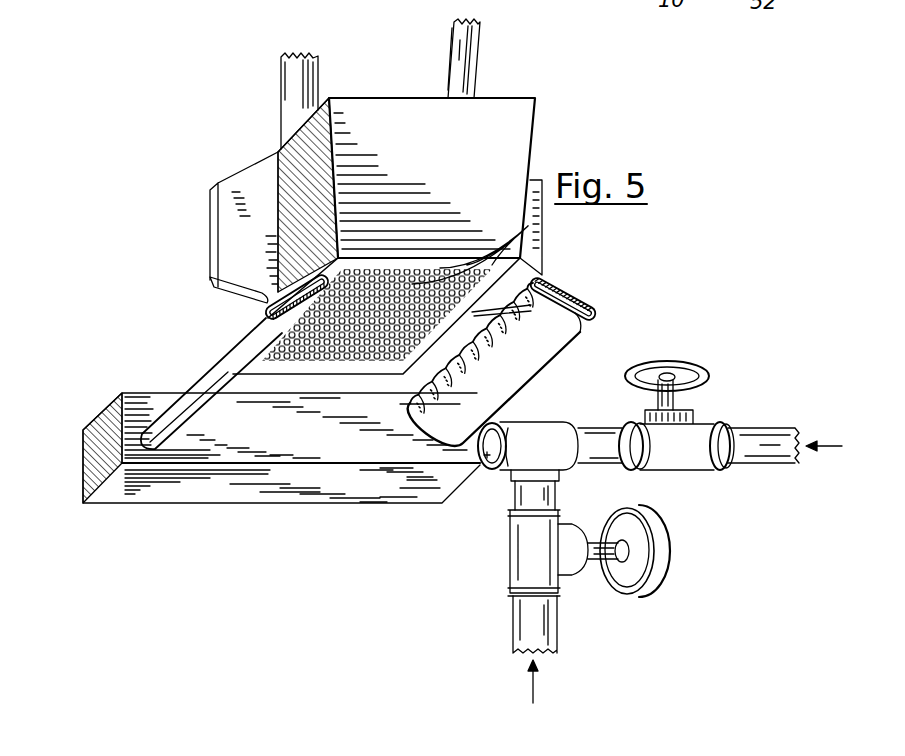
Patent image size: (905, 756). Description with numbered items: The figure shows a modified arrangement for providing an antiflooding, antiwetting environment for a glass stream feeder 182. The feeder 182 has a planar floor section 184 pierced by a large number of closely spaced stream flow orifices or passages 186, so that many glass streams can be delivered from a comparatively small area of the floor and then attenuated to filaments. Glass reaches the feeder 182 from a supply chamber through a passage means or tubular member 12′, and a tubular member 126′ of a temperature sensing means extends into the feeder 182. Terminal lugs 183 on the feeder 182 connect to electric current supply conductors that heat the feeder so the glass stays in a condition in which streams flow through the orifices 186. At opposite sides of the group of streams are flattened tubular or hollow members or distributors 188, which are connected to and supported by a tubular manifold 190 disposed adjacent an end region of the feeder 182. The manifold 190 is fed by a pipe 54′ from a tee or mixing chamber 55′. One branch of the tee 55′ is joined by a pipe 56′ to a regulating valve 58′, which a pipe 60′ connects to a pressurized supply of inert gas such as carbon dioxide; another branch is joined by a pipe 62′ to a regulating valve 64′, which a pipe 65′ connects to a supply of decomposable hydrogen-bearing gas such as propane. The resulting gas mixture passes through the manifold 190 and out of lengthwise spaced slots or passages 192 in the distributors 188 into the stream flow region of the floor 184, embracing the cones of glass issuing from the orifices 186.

The passage means or tubular member 12′ is at (343, 36).
The tubular member of a temperature sensing means 126′ is at (449, 48).
The glass stream feeder 182 is at (537, 98).
The terminal lugs 183 is at (245, 178).
The planar floor section 184 is at (343, 367).
The stream flow orifices or passages 186 is at (528, 226).
The flattened tubular or hollow members or distributors 188 is at (530, 380).
The tubular manifold 190 is at (83, 488).
The spaced slots or passages 192 is at (548, 345).
The pipe 54′ is at (482, 468).
The tee or mixing chamber 55′ is at (512, 422).
The pipe 56′ is at (606, 402).
The regulating valve 58′ is at (700, 422).
The pipe 60′ is at (752, 428).
The pipe 62′ is at (514, 497).
The regulating valve 64′ is at (565, 578).
The pipe 65′ is at (513, 625).